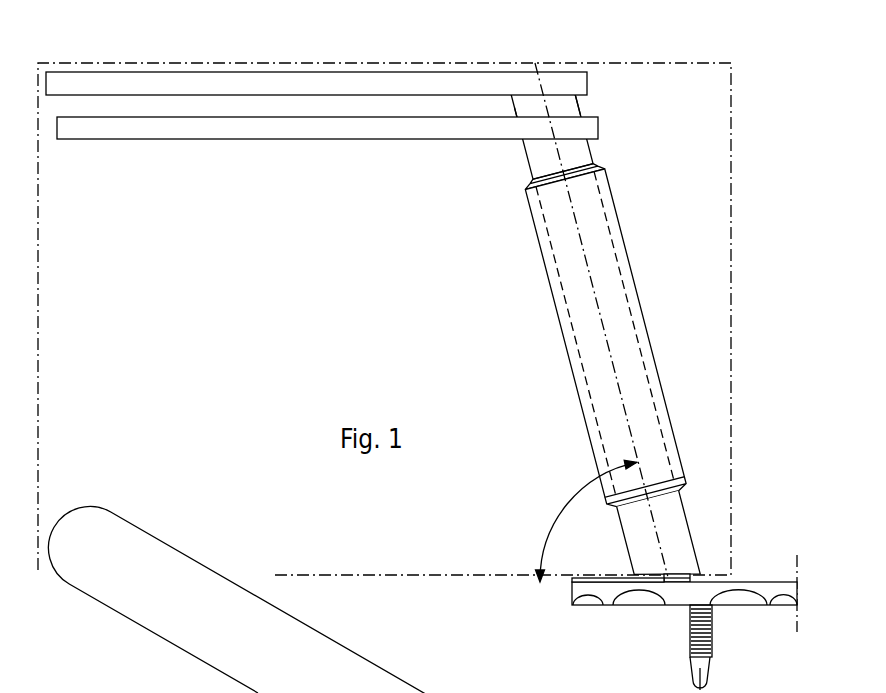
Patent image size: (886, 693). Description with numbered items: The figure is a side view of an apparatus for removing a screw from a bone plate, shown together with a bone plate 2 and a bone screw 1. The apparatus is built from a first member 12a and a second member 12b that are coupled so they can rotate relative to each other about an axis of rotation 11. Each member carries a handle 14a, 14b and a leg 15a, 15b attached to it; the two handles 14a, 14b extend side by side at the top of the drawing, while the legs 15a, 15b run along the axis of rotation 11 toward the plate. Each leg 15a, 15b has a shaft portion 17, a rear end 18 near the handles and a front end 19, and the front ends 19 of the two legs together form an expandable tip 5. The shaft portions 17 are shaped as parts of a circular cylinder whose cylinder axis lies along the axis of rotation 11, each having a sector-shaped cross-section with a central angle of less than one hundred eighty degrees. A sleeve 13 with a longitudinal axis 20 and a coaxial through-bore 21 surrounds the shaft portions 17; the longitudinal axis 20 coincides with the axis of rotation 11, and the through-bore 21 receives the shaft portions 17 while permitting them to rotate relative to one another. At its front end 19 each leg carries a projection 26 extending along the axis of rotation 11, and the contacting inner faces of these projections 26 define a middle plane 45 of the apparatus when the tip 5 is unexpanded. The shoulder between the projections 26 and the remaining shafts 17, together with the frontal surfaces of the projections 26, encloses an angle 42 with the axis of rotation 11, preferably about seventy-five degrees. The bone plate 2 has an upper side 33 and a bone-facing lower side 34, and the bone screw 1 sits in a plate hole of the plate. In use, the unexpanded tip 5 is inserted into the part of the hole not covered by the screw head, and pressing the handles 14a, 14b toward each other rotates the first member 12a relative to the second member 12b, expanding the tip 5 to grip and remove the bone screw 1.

The bone screw 1 is at (713, 643).
The bone plate 2 is at (659, 586).
The expandable tip 5 is at (712, 572).
The axis of rotation 11 is at (592, 319).
The first member 12a is at (619, 128).
The second member 12b is at (597, 150).
The sleeve 13 is at (548, 252).
The handle 14a is at (188, 128).
The handle 14b is at (192, 92).
The leg 15a is at (296, 599).
The leg 15b is at (533, 150).
The shaft portion 17 is at (677, 525).
The rear end 18 is at (563, 100).
The front end 19 is at (673, 587).
The longitudinal axis 20 is at (620, 400).
The through-bore 21 is at (568, 310).
The projection 26 is at (682, 573).
The upper side 33 is at (600, 578).
The lower side 34 is at (618, 603).
The angle 42 is at (585, 521).
The middle plane 45 is at (707, 192).